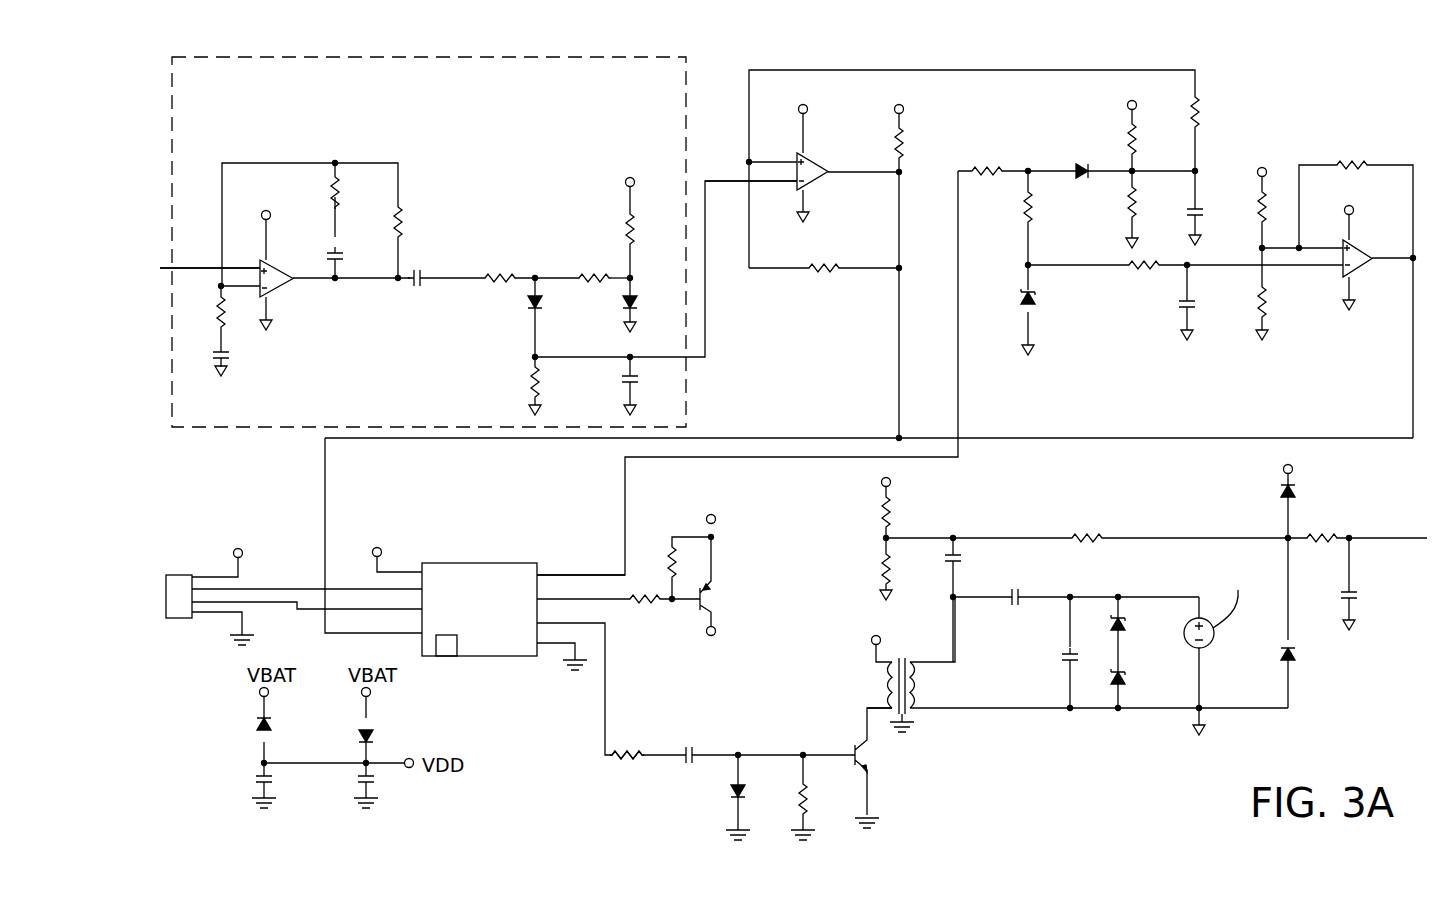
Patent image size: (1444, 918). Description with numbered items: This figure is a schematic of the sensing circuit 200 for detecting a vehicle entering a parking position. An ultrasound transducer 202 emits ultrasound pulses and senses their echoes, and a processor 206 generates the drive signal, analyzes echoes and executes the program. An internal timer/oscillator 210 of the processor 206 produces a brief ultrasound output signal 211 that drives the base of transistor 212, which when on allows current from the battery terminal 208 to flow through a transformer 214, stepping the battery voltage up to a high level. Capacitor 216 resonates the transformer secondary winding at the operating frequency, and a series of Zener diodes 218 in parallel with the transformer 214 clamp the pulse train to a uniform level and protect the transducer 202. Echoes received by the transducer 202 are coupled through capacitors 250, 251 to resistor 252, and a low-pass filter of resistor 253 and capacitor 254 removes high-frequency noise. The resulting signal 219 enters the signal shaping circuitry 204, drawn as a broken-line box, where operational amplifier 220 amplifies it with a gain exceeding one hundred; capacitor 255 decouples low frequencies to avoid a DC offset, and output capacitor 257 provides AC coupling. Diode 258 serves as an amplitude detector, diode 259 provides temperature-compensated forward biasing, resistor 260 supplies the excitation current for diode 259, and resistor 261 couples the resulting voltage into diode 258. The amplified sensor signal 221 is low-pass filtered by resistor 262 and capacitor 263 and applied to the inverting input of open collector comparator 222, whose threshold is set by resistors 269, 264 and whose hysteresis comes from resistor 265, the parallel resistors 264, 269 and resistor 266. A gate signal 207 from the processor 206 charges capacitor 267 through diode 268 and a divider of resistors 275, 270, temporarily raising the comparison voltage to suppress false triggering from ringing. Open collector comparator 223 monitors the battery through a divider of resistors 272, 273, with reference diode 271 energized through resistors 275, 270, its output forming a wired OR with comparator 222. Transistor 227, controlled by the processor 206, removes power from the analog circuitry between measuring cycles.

The sensing circuit 200 is at (877, 66).
The ultrasound transducer 202 is at (1218, 645).
The signal shaping circuitry 204 is at (388, 54).
The processor 206 is at (467, 556).
The gate signal 207 is at (595, 550).
The battery terminal 208 is at (870, 640).
The timer/oscillator 210 is at (446, 650).
The ultrasound output signal 211 is at (607, 652).
The transistor 212 is at (848, 750).
The transformer 214 is at (916, 731).
The capacitor 216 is at (1080, 650).
The Zener diodes 218 is at (1134, 660).
The signal 219 is at (197, 272).
The operational amplifier 220 is at (240, 247).
The amplified sensor signal 221 is at (532, 345).
The open collector comparator 222 is at (816, 162).
The open collector comparator 223 is at (1360, 252).
The transistor 227 is at (716, 589).
The capacitor 250 is at (968, 560).
The capacitor 251 is at (1015, 608).
The resistor 252 is at (1083, 534).
The resistor 253 is at (1321, 532).
The capacitor 254 is at (1365, 595).
The capacitor 255 is at (236, 351).
The output capacitor 257 is at (416, 290).
The diode 258 is at (525, 309).
The diode 259 is at (640, 302).
The resistor 260 is at (642, 236).
The resistor 261 is at (591, 290).
The resistor 262 is at (495, 270).
The capacitor 263 is at (620, 378).
The resistor 264 is at (1140, 205).
The resistor 265 is at (1203, 110).
The resistor 266 is at (818, 277).
The capacitor 267 is at (1225, 205).
The diode 268 is at (1082, 163).
The resistor 269 is at (1172, 128).
The resistor 270 is at (1036, 210).
The reference diode 271 is at (1040, 298).
The resistor 272 is at (1205, 225).
The resistor 273 is at (1252, 296).
The resistor 275 is at (990, 165).